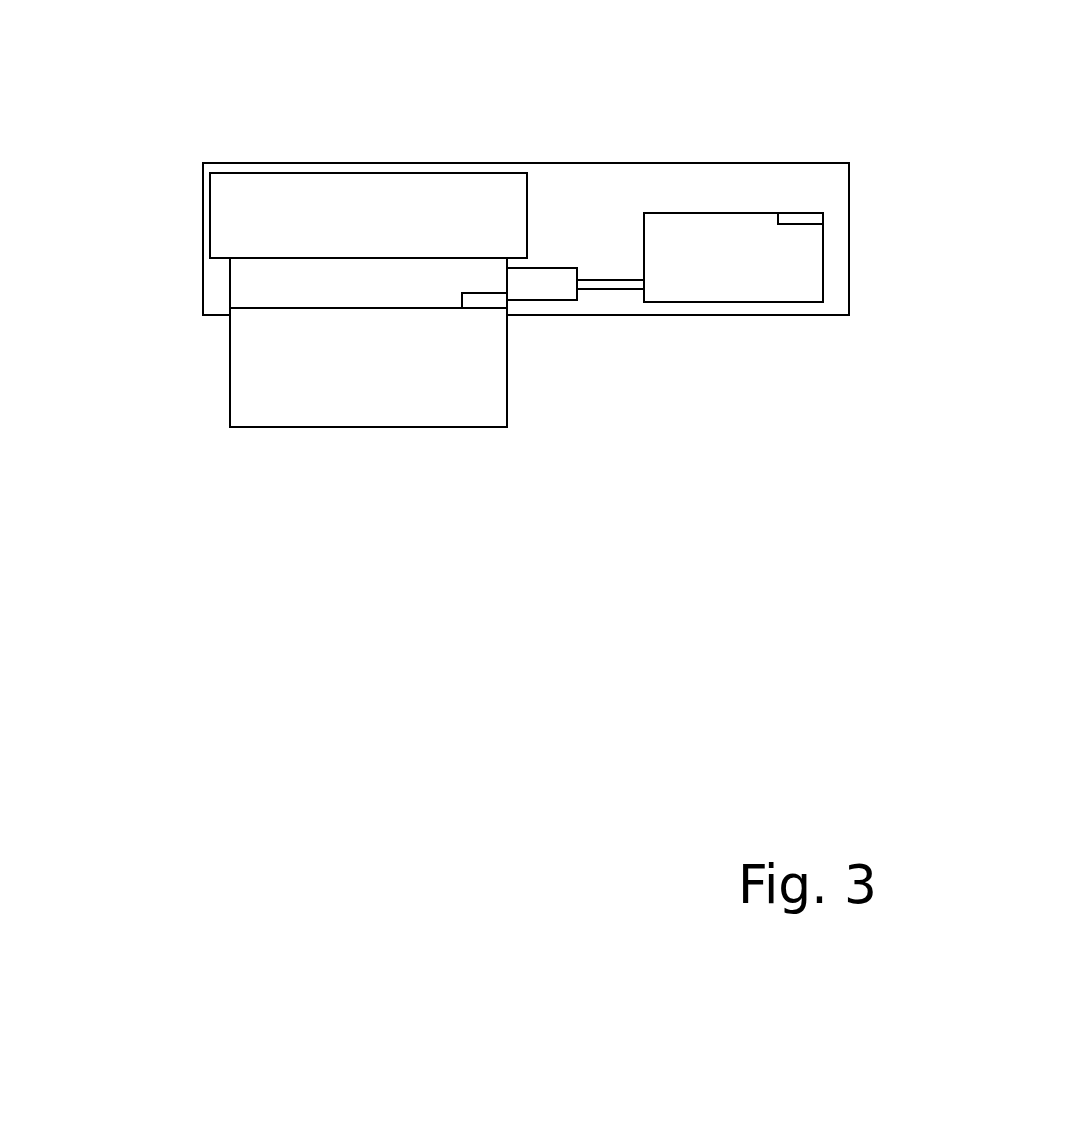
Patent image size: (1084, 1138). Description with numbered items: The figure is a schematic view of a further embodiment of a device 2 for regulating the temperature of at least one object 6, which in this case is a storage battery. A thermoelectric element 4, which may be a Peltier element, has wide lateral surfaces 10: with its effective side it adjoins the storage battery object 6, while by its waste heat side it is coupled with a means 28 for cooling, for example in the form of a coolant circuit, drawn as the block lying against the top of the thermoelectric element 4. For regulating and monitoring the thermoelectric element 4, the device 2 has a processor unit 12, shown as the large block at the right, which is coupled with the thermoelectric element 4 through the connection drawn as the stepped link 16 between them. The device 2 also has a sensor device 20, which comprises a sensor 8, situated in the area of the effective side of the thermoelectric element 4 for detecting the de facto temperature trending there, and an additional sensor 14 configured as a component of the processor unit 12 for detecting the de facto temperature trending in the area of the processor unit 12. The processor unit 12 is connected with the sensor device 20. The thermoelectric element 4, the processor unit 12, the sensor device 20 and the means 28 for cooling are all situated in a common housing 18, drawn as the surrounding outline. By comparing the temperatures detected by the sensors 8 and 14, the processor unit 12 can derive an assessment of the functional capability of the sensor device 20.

The device for regulating the temperature of at least one object 2 is at (362, 604).
The thermoelectric element 4 is at (230, 288).
The object 6 is at (230, 368).
The sensor 8 is at (487, 300).
The wide lateral surface 10 is at (267, 257).
The processor unit 12 is at (713, 213).
The additional sensor 14 is at (795, 224).
The connecting element 16 is at (613, 280).
The housing 18 is at (750, 316).
The sensor device 20 is at (642, 260).
The means for cooling 28 is at (360, 181).